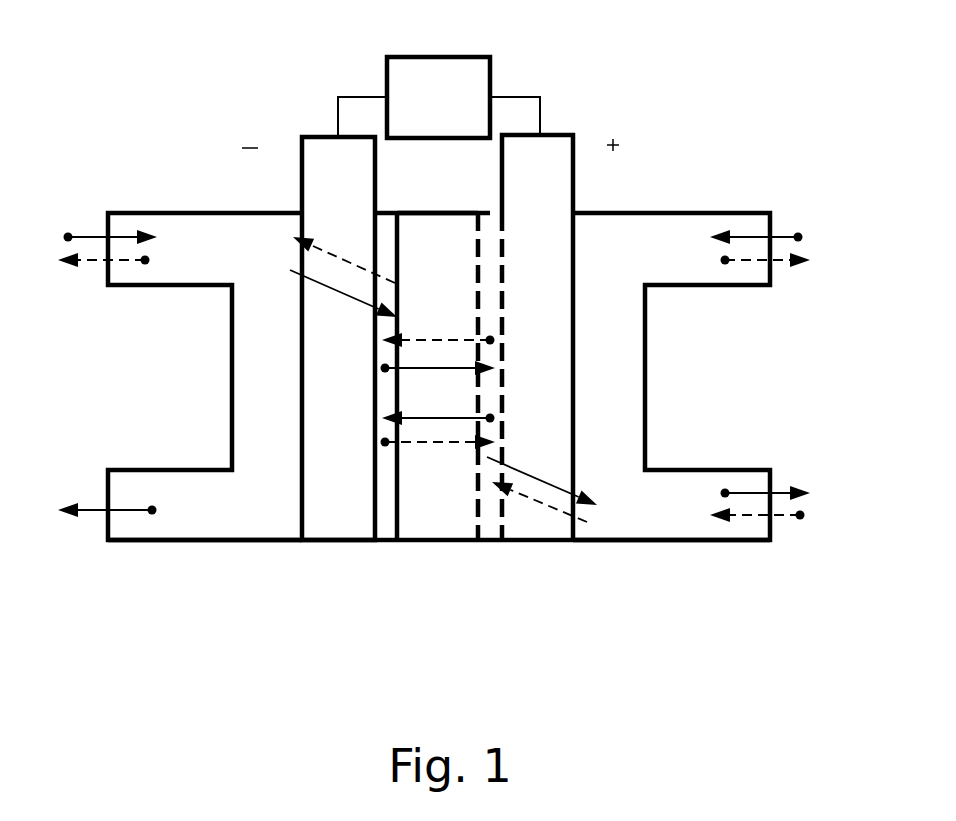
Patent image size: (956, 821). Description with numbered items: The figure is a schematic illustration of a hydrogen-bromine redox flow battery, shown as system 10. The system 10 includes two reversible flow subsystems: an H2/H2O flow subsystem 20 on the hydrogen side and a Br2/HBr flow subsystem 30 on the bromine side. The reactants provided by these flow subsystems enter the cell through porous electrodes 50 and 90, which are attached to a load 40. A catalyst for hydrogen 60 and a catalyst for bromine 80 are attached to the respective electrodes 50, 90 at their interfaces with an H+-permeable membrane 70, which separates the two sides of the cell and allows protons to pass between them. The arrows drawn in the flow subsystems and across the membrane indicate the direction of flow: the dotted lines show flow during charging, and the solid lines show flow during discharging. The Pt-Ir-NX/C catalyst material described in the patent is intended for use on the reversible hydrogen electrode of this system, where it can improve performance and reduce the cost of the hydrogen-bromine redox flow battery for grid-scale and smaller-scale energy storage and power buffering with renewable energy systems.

The system 10 is at (708, 35).
The H2/H2O reversible flow subsystem 20 is at (126, 175).
The Br2/HBr reversible flow subsystem 30 is at (774, 175).
The load 40 is at (456, 113).
The porous electrode 50 is at (328, 543).
The H2 catalyst 60 is at (387, 543).
The H+-permeable membrane 70 is at (437, 543).
The Br2 catalyst 80 is at (492, 543).
The porous electrode 90 is at (552, 543).